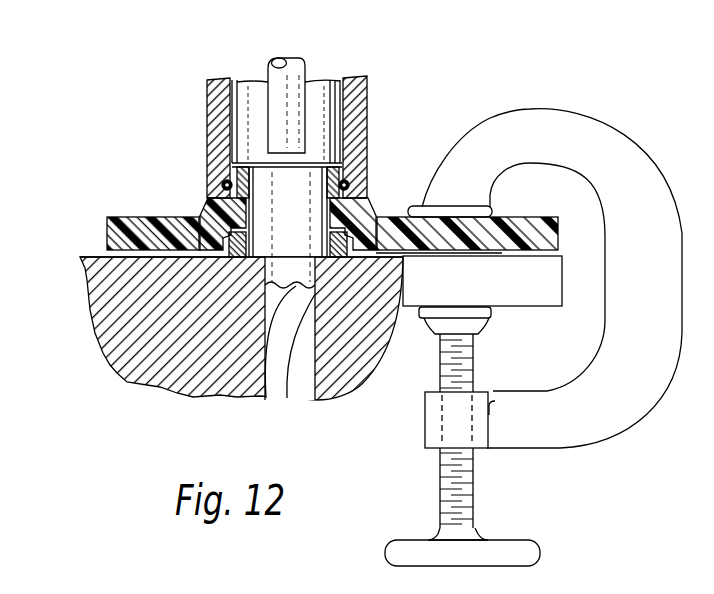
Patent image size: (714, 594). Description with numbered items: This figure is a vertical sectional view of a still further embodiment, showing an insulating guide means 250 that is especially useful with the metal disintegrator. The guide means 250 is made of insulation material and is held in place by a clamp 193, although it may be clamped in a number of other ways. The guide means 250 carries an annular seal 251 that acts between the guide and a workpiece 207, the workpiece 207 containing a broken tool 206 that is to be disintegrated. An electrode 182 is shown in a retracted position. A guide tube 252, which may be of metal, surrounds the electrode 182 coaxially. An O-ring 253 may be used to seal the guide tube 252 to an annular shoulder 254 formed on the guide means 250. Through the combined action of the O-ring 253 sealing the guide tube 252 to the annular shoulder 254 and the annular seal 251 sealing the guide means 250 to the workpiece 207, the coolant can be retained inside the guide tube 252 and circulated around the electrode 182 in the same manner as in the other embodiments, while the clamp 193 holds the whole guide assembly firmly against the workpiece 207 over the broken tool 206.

The electrode 182 is at (268, 90).
The clamp 193 is at (598, 130).
The broken tool 206 is at (297, 377).
The workpiece 207 is at (97, 266).
The insulating guide means 250 is at (160, 205).
The annular seal 251 is at (238, 257).
The guide tube 252 is at (368, 108).
The O-ring 253 is at (370, 149).
The annular shoulder 254 is at (378, 197).